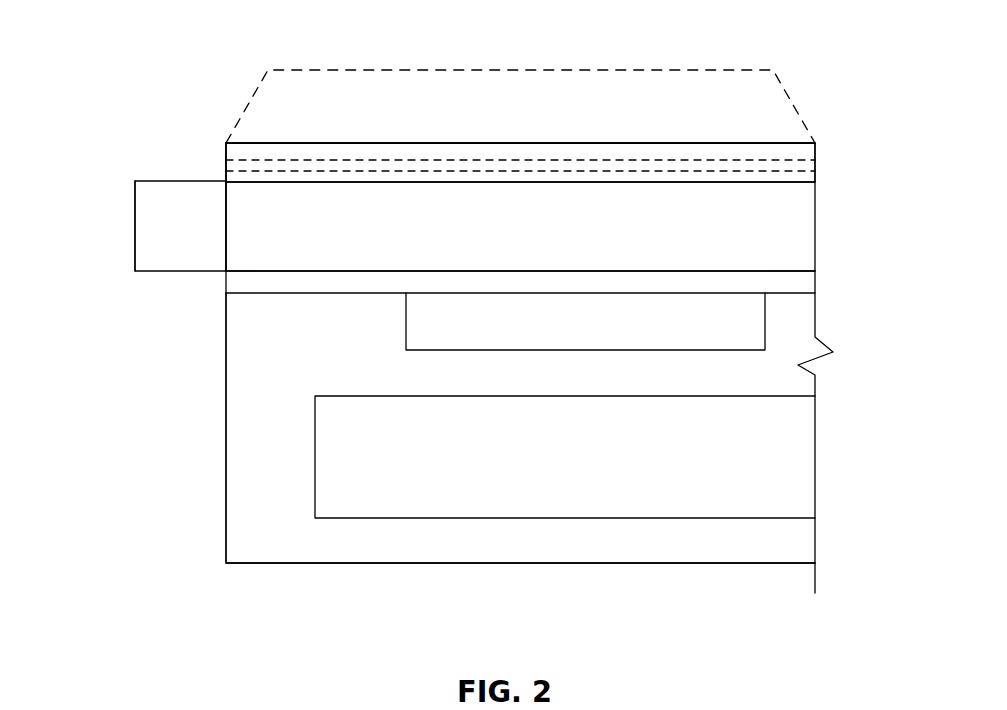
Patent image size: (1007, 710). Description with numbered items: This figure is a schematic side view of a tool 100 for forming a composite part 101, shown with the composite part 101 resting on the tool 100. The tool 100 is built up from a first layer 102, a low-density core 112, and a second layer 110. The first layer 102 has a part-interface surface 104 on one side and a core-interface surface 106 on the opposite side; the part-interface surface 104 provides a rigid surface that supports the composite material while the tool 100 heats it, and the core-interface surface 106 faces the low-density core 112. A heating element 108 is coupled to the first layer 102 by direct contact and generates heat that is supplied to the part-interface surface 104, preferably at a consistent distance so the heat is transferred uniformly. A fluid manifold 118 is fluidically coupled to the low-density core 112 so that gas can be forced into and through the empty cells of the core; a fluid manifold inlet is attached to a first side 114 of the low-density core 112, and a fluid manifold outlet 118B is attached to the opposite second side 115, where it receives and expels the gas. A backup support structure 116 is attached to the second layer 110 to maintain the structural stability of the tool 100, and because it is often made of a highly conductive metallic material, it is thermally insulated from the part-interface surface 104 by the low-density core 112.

The tool 100 is at (682, 143).
The composite part 101 is at (613, 70).
The first layer 102 is at (357, 152).
The part-interface surface 104 is at (302, 143).
The core-interface surface 106 is at (360, 182).
The heating element 108 is at (765, 160).
The second layer 110 is at (525, 282).
The low-density core 112 is at (241, 259).
The first side 114 is at (225, 192).
The second side 115 is at (225, 225).
The backup support structure 116 is at (282, 415).
The fluid manifold 118 is at (148, 179).
The fluid manifold outlet 118B is at (135, 205).